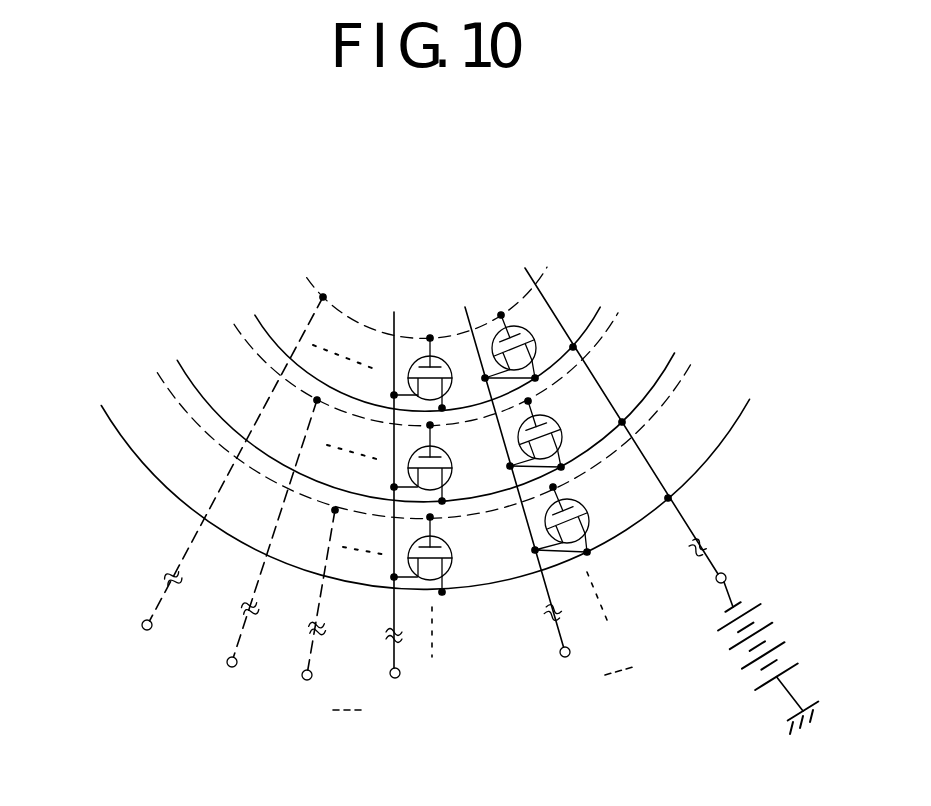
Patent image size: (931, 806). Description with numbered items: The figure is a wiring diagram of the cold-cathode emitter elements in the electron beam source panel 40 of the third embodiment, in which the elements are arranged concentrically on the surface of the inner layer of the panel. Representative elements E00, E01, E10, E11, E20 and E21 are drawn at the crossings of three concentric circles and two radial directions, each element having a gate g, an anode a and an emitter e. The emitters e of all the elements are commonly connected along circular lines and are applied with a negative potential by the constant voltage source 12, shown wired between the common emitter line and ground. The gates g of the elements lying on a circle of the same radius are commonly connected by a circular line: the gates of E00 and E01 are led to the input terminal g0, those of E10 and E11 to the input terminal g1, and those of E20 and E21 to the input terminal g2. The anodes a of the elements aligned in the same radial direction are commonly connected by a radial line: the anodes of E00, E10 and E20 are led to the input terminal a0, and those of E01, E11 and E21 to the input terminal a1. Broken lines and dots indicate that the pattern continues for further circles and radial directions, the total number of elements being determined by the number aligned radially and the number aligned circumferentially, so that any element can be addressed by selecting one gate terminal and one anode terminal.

The electron beam source panel 40 is at (425, 419).
The constant voltage source 12 is at (790, 632).
The cold-cathode emitter element E00 is at (422, 373).
The cold-cathode emitter element E01 is at (516, 342).
The cold-cathode emitter element E10 is at (441, 463).
The cold-cathode emitter element E11 is at (552, 434).
The cold-cathode emitter element E20 is at (441, 554).
The cold-cathode emitter element E21 is at (578, 519).
The input terminal g0 is at (226, 478).
The input terminal g1 is at (266, 547).
The input terminal g2 is at (313, 612).
The input terminal a0 is at (398, 515).
The input terminal a1 is at (525, 501).
The gate g is at (428, 338).
The anode a is at (393, 394).
The emitter e is at (427, 361).